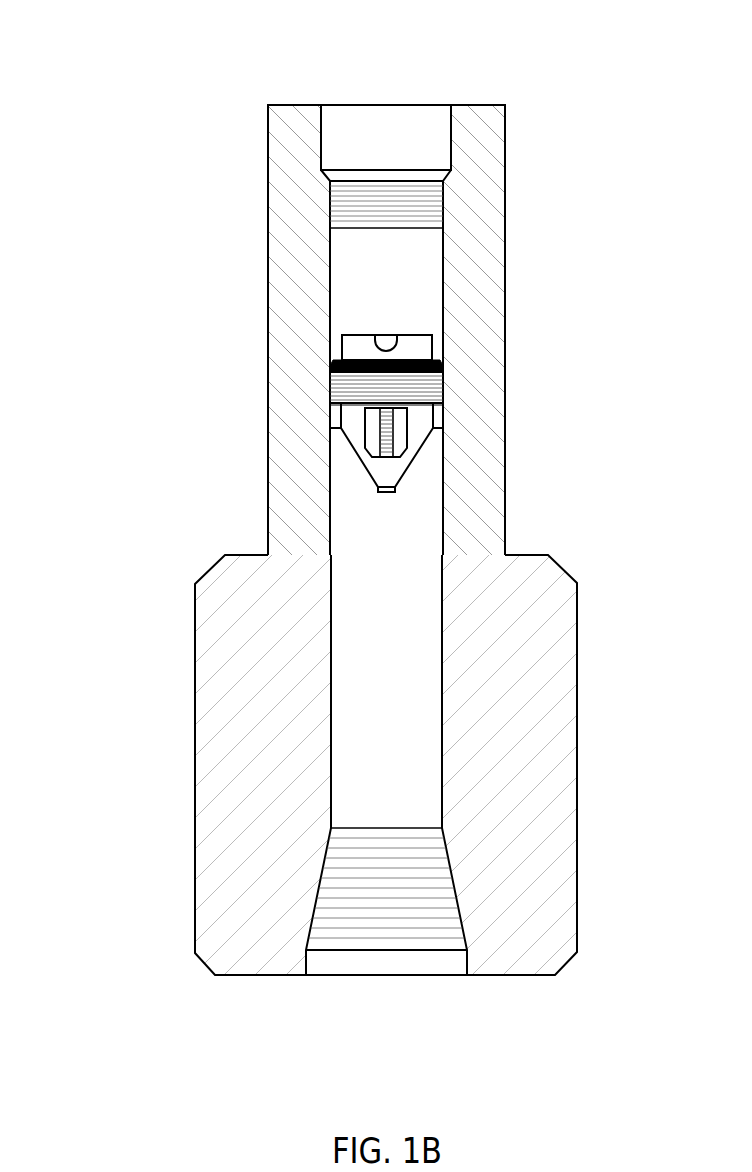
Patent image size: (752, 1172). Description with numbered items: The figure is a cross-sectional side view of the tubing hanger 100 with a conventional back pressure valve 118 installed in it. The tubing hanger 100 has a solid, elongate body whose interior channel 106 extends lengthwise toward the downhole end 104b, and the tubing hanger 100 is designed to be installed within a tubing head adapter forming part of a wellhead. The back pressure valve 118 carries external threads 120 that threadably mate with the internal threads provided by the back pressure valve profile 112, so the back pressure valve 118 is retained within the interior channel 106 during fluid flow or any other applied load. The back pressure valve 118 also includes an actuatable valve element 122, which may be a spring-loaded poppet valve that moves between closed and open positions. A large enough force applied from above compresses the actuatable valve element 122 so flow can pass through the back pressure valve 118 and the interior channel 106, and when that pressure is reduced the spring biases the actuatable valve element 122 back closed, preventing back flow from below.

The tubing hanger 100 is at (128, 48).
The downhole end 104b is at (211, 971).
The interior channel 106 is at (441, 517).
The back pressure valve profile 112 is at (334, 378).
The back pressure valve 118 is at (343, 335).
The external threads 120 is at (427, 388).
The actuatable valve element 122 is at (380, 433).